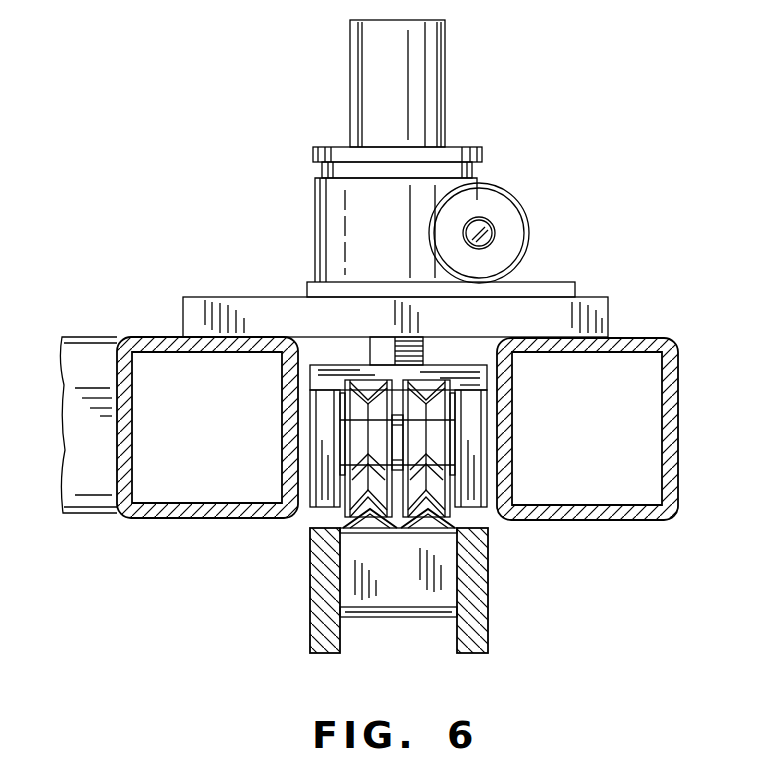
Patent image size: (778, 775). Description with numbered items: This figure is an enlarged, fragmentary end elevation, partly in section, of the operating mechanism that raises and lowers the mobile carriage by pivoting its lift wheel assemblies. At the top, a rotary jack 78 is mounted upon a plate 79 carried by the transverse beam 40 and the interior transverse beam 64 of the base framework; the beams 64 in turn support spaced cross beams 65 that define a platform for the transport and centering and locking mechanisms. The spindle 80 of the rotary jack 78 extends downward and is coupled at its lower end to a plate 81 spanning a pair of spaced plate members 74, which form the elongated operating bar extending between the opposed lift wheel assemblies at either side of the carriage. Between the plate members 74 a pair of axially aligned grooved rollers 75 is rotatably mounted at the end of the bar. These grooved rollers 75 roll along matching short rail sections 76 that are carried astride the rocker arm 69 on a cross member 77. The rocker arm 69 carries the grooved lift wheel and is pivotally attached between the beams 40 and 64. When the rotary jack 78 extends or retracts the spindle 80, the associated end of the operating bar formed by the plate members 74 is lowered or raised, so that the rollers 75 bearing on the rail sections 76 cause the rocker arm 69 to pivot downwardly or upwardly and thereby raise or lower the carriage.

The transverse beam 40 is at (655, 522).
The interior transverse beam 64 is at (155, 512).
The cross beam 65 is at (93, 350).
The rocker arm 69 is at (313, 623).
The plate member 74 is at (317, 497).
The grooved roller 75 is at (352, 437).
The short rail section 76 is at (428, 512).
The cross member 77 is at (360, 612).
The rotary jack 78 is at (325, 203).
The plate 79 is at (588, 308).
The spindle 80 is at (382, 348).
The plate 81 is at (472, 373).